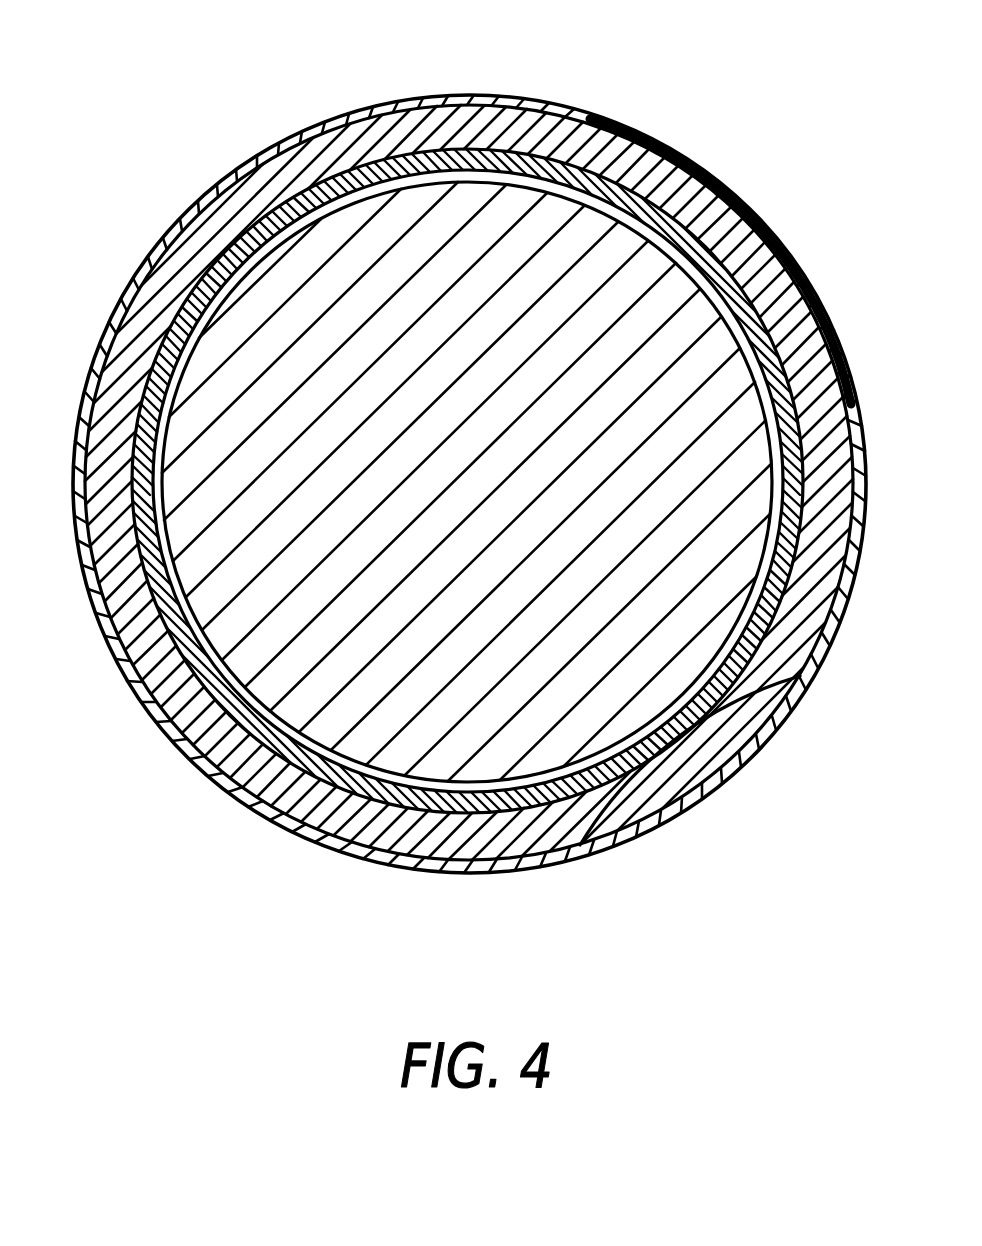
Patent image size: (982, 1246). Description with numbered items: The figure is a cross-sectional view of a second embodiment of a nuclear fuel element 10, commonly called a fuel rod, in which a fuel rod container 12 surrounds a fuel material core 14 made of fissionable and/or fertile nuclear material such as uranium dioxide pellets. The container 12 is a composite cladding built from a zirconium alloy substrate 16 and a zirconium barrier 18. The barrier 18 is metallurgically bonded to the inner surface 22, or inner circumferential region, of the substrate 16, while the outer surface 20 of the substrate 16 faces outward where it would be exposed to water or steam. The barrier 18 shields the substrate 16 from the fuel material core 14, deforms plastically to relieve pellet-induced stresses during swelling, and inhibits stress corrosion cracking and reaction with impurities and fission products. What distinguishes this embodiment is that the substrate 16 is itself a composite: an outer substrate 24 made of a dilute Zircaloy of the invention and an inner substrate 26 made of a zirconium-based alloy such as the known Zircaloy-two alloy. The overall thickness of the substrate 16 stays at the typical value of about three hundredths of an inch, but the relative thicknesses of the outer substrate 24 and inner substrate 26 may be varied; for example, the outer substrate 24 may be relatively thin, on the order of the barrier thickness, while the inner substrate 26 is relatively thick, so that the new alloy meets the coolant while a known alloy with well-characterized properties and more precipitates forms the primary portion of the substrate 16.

The nuclear fuel element 10 is at (666, 92).
The fuel rod container 12 is at (217, 183).
The fuel material core 14 is at (227, 638).
The zirconium alloy substrate 16 is at (725, 740).
The zirconium barrier 18 is at (687, 238).
The outer surface 20 is at (685, 812).
The inner surface 22 is at (773, 633).
The outer substrate 24 is at (375, 107).
The inner substrate 26 is at (515, 140).